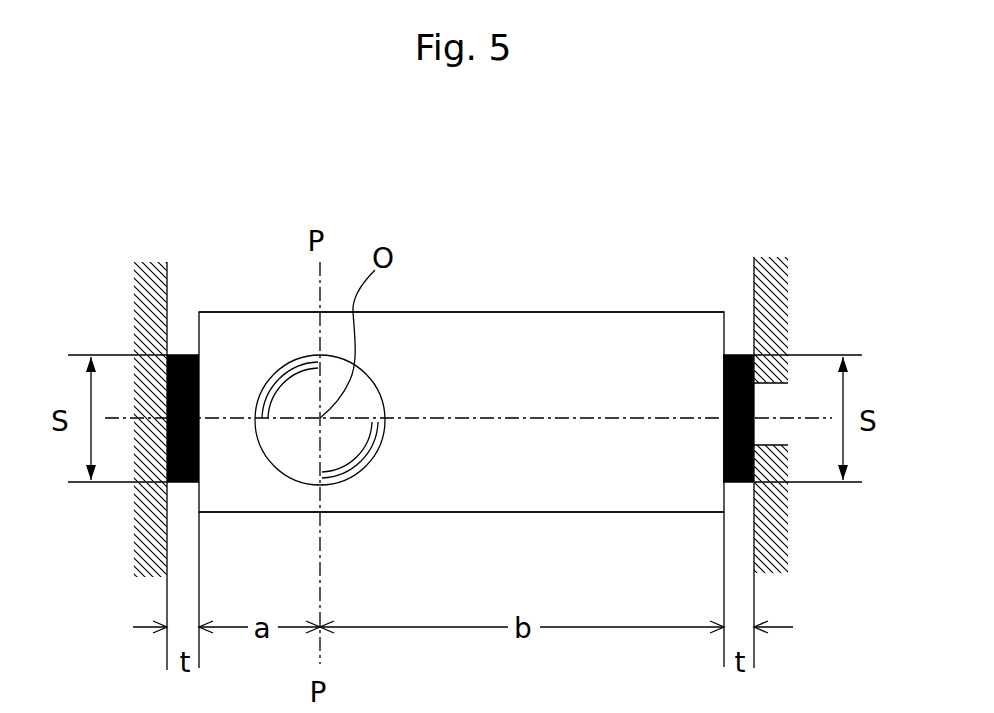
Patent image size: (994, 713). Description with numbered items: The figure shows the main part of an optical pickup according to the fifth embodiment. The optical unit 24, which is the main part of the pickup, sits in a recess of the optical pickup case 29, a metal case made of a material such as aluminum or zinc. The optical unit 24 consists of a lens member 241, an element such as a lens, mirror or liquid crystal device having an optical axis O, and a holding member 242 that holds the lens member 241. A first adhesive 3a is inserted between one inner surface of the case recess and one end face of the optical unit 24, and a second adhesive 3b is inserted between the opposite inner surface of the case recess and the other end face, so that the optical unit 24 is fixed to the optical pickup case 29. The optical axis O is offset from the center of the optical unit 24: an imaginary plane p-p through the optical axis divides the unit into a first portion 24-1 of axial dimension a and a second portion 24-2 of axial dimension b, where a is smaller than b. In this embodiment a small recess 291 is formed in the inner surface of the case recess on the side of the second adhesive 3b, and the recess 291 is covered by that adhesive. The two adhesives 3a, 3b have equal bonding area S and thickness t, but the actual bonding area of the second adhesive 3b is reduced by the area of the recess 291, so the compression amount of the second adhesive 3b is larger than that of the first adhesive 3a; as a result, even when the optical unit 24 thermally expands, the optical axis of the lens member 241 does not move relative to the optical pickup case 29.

The optical unit 24 is at (712, 178).
The first portion 24-1 is at (263, 506).
The second portion 24-2 is at (597, 506).
The lens member 241 is at (372, 384).
The holding member 242 is at (612, 314).
The optical pickup case 29 is at (149, 266).
The small recess 291 is at (786, 403).
The first adhesive 3a is at (180, 483).
The second adhesive 3b is at (744, 483).